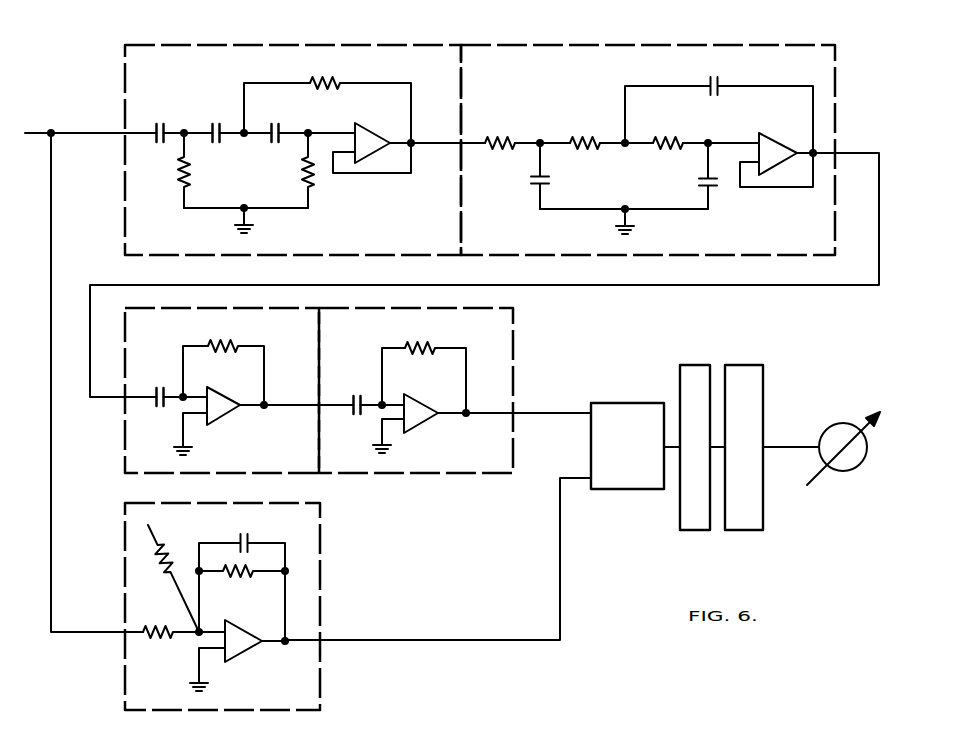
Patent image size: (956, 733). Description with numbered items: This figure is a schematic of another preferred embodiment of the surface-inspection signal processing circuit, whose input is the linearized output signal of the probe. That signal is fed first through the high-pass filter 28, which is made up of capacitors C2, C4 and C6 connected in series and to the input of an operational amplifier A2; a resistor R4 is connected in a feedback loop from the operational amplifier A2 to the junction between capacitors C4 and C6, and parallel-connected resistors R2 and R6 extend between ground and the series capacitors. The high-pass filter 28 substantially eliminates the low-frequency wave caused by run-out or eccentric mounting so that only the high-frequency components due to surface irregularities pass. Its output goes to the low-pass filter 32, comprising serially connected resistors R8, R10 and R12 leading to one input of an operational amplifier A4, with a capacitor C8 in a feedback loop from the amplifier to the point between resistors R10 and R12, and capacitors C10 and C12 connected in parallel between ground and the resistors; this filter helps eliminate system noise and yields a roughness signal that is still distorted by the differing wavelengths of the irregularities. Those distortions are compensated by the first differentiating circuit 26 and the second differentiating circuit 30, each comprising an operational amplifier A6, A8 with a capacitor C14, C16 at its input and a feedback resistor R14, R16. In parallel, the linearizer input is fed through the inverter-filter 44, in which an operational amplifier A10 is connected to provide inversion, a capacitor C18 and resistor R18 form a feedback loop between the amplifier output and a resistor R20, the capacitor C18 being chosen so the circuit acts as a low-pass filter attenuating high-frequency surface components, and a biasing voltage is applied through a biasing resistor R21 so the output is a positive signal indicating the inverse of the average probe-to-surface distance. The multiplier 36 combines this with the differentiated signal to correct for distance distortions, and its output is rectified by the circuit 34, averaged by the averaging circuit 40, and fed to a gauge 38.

The first differentiating circuit 26 is at (125, 440).
The high-pass filter 28 is at (193, 45).
The second differentiating circuit 30 is at (513, 453).
The low-pass filter 32 is at (563, 45).
The rectifying circuit 34 is at (690, 365).
The multiplier 36 is at (612, 403).
The gauge 38 is at (836, 425).
The averaging circuit 40 is at (740, 365).
The inverter-filter 44 is at (322, 555).
The capacitor C2 is at (158, 125).
The capacitor C4 is at (214, 125).
The capacitor C6 is at (273, 125).
The capacitor C8 is at (719, 106).
The capacitor C10 is at (557, 176).
The capacitor C12 is at (690, 176).
The capacitor C14 is at (157, 387).
The capacitor C16 is at (354, 396).
The capacitor C18 is at (242, 545).
The resistor R2 is at (196, 170).
The resistor R4 is at (327, 101).
The resistor R6 is at (294, 170).
The resistor R8 is at (500, 133).
The resistor R10 is at (584, 133).
The resistor R12 is at (667, 133).
The feedback resistor R14 is at (223, 364).
The feedback resistor R16 is at (424, 369).
The resistor R18 is at (242, 603).
The resistor R20 is at (183, 622).
The biasing resistor R21 is at (165, 573).
The operational amplifier A2 is at (372, 138).
The operational amplifier A4 is at (776, 152).
The operational amplifier A6 is at (219, 413).
The operational amplifier A8 is at (419, 416).
The operational amplifier A10 is at (237, 650).